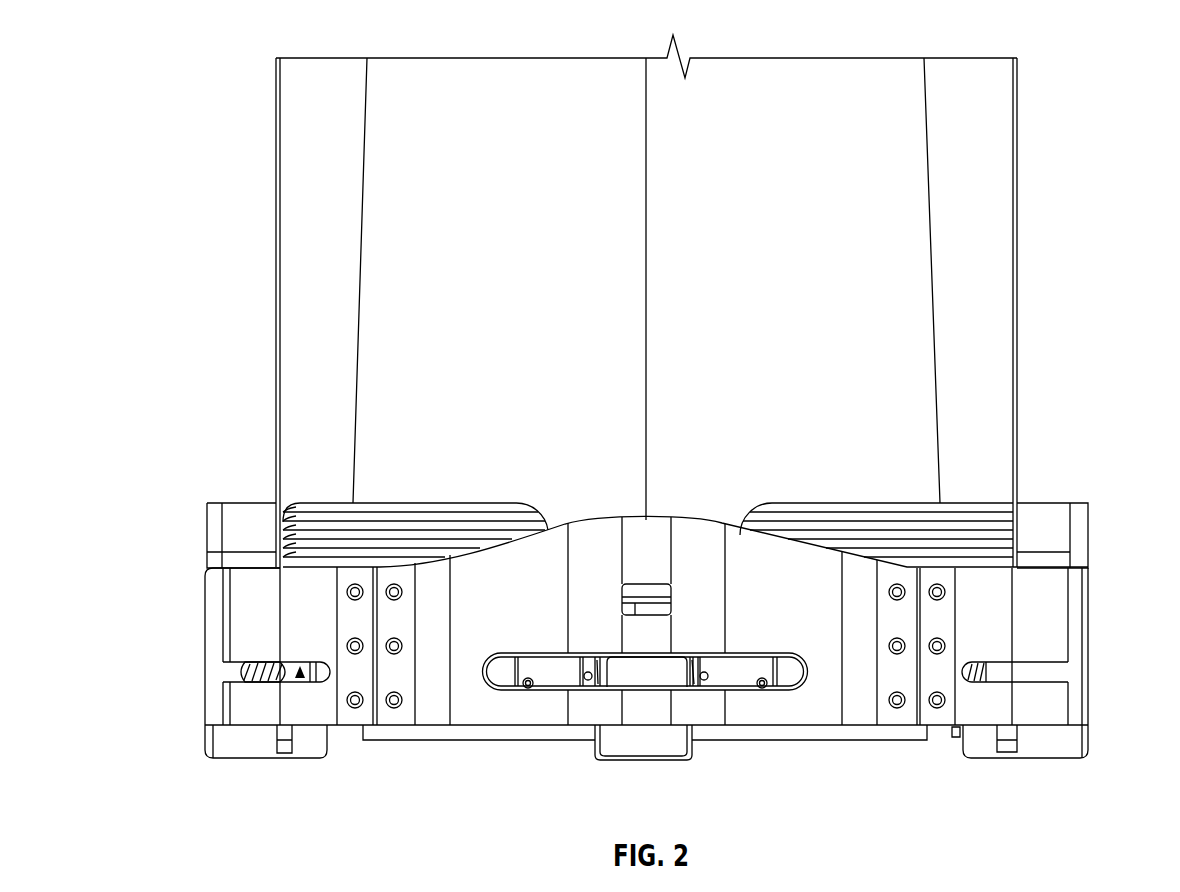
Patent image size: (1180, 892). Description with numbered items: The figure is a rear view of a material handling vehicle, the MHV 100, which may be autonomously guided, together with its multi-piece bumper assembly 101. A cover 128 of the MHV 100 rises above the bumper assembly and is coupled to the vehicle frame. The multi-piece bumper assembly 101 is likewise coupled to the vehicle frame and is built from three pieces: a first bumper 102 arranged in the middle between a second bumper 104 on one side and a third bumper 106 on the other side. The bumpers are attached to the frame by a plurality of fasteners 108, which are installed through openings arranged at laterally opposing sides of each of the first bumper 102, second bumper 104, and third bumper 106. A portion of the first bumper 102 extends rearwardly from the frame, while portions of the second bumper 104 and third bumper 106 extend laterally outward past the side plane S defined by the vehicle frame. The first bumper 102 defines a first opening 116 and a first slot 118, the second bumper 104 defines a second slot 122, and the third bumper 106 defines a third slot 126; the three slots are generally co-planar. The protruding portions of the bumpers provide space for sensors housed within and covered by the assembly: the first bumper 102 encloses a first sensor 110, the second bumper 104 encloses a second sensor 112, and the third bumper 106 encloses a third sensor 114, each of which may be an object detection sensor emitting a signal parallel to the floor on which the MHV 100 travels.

The MHV 100 is at (404, 40).
The cover 128 is at (305, 132).
The side plane S is at (277, 395).
The multi-piece bumper assembly 101 is at (148, 514).
The first bumper 102 is at (494, 565).
The second bumper 104 is at (240, 596).
The third bumper 106 is at (1050, 617).
The fasteners 108 is at (350, 593).
The first sensor 110 is at (621, 672).
The first slot 118 is at (561, 684).
The first opening 116 is at (646, 612).
The second sensor 112 is at (267, 672).
The second slot 122 is at (302, 680).
The third sensor 114 is at (1040, 673).
The third slot 126 is at (1000, 672).